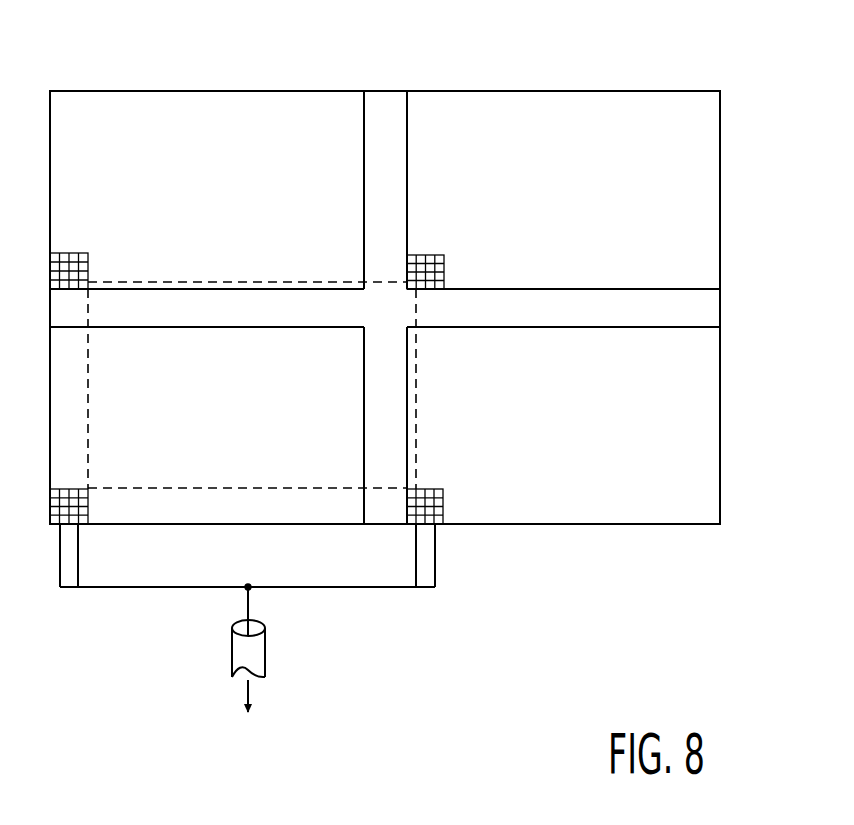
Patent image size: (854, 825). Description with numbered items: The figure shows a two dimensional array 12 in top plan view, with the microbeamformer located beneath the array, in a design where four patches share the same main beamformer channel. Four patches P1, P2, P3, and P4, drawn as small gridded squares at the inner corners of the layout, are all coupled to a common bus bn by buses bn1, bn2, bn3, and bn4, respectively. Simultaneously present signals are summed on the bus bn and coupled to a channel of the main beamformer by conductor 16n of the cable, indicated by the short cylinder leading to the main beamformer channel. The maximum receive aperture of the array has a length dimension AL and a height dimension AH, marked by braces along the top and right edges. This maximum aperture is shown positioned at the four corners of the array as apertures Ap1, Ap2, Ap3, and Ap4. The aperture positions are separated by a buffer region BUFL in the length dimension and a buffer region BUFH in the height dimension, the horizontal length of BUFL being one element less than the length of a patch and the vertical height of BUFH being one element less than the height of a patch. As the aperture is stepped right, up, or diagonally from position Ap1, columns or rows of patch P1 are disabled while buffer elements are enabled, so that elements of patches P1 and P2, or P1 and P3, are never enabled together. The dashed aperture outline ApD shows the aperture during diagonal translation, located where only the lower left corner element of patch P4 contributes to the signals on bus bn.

The two dimensional array 12 is at (118, 82).
The conductor 16n is at (266, 648).
The patch P1 is at (52, 504).
The patch P2 is at (440, 503).
The patch P3 is at (84, 267).
The patch P4 is at (440, 268).
The aperture Ap1 is at (226, 440).
The aperture Ap2 is at (584, 440).
The aperture Ap3 is at (226, 195).
The aperture Ap4 is at (584, 195).
The dashed aperture outline ApD is at (88, 372).
The bus bn is at (254, 584).
The bus bn1 is at (60, 565).
The bus bn2 is at (414, 558).
The bus bn3 is at (80, 557).
The bus bn4 is at (437, 565).
The buffer region BUFL is at (407, 85).
The buffer region BUFH is at (724, 291).
The aperture length dimension AL is at (720, 86).
The aperture height dimension AH is at (724, 91).